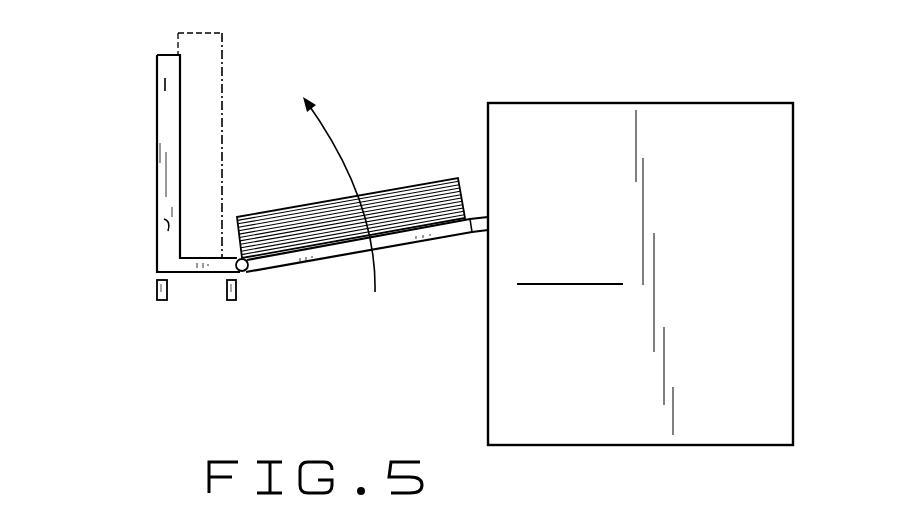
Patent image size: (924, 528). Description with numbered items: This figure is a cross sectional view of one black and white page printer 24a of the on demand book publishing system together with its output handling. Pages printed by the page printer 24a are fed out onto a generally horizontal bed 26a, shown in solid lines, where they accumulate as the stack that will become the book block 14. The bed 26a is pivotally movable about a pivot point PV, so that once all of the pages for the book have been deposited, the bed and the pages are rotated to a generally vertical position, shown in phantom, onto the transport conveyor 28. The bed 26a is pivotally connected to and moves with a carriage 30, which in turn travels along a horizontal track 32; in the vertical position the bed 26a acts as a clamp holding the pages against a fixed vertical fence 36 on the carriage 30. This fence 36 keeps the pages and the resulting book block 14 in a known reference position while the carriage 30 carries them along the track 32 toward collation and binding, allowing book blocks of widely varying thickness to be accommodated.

The book block 14 is at (409, 172).
The page printer 24a is at (803, 160).
The bed 26a is at (287, 274).
The transport conveyor 28 is at (134, 155).
The carriage 30 is at (157, 229).
The horizontal track 32 is at (231, 301).
The fixed vertical fence 36 is at (165, 86).
The pivot point PV is at (244, 272).